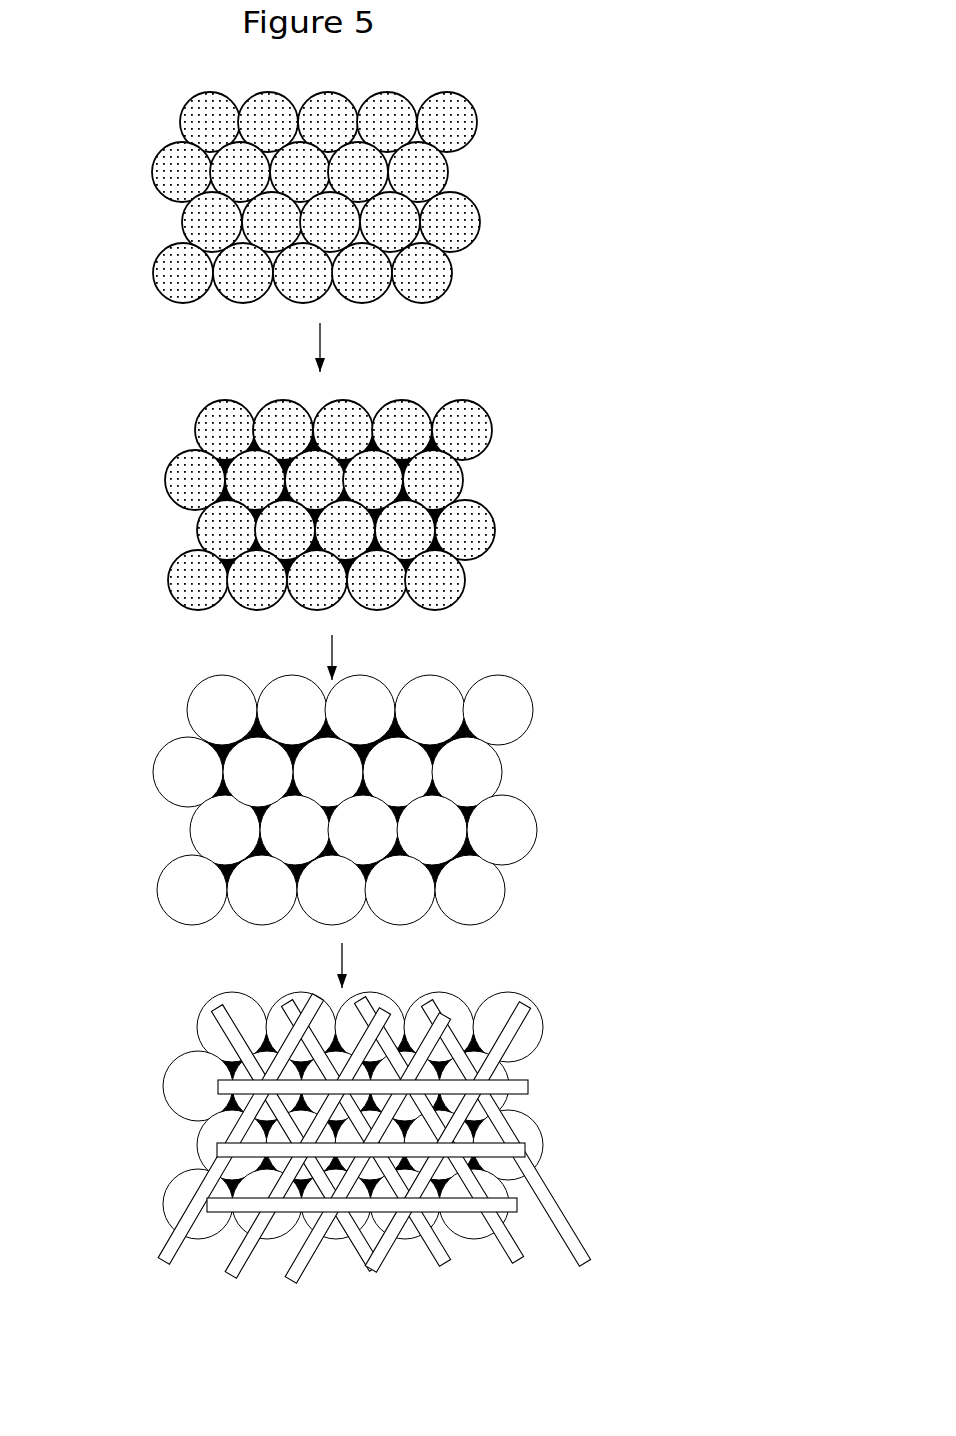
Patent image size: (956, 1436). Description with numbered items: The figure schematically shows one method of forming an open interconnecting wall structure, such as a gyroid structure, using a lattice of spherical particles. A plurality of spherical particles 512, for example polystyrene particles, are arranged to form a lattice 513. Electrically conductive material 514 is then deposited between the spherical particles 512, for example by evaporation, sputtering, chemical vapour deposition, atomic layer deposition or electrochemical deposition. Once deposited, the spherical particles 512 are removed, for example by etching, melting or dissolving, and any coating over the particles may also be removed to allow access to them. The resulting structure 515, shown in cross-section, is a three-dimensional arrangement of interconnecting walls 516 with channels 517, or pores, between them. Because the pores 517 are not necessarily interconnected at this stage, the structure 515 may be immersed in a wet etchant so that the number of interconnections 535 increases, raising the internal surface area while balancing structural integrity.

The spherical particles 512 is at (458, 212).
The lattice 513 is at (301, 173).
The electrically conductive material 514 is at (447, 505).
The structure 515 is at (359, 771).
The interconnecting walls 516 is at (470, 830).
The channels 517 is at (253, 772).
The interconnections 535 is at (457, 1057).